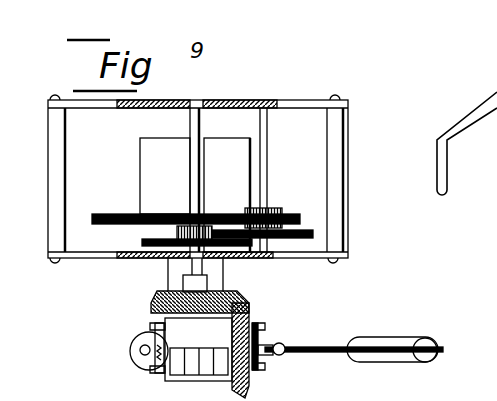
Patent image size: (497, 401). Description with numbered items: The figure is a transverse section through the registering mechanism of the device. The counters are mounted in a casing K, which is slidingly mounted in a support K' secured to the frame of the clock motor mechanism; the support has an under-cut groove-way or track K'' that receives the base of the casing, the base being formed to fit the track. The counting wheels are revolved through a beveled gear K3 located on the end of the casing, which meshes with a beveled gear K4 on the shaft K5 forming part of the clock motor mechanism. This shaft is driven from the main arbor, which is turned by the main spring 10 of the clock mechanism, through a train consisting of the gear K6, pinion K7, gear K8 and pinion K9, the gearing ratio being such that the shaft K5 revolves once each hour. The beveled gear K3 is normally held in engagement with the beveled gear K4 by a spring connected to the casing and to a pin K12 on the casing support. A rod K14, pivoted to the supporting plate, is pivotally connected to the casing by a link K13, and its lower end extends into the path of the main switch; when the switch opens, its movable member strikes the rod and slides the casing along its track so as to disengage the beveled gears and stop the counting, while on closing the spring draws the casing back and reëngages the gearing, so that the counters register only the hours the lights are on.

The main spring 10 is at (227, 195).
The casing K is at (162, 342).
The support K' is at (252, 361).
The under-cut groove-way or track K'' is at (125, 361).
The beveled gear K3 is at (252, 308).
The beveled gear K4 is at (236, 293).
The shaft K5 is at (196, 160).
The gear K6 is at (113, 214).
The pinion K7 is at (282, 210).
The gear K8 is at (307, 231).
The pinion K9 is at (177, 234).
The pin K12 is at (140, 349).
The link K13 is at (321, 347).
The rod K14 is at (395, 338).